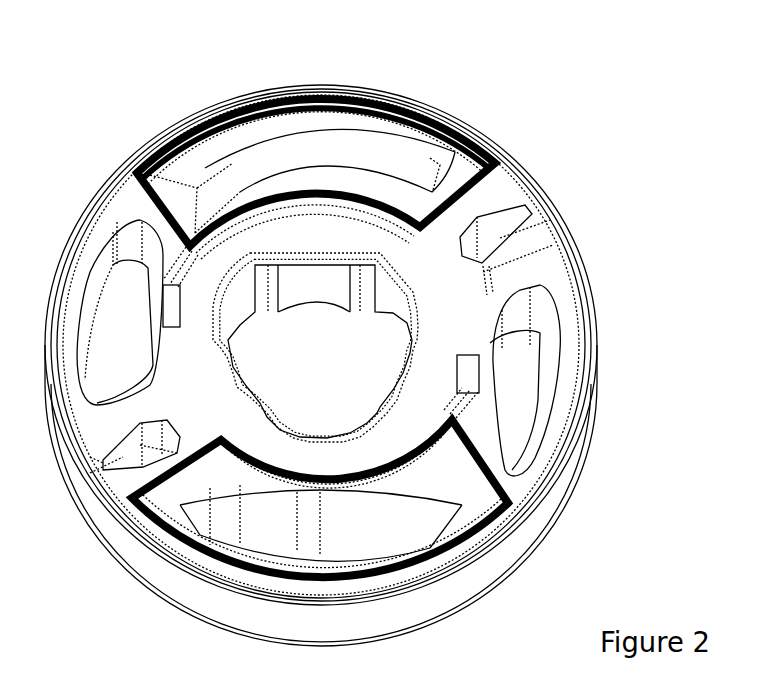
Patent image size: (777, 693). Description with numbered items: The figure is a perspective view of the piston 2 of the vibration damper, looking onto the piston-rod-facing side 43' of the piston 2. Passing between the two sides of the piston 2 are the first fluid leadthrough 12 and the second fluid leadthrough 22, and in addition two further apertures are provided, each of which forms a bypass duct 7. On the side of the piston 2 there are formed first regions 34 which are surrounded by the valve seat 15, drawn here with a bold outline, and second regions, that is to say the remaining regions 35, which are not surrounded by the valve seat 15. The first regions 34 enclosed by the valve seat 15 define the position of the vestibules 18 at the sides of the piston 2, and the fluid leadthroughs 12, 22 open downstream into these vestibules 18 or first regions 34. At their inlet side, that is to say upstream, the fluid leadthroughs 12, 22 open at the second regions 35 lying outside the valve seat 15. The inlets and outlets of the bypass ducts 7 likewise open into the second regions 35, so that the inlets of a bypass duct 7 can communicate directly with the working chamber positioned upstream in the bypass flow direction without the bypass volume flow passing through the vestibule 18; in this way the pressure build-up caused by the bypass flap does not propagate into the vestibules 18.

The piston 2 is at (190, 92).
The first valve seat 15 is at (381, 102).
The vestibule 18 is at (326, 165).
The first side region, surrounded by valve seat 34 is at (429, 533).
The first fluid leadthrough 12 is at (374, 161).
The piston-rod-facing side of the piston 43' is at (315, 327).
The second side region, not surrounded by valve seat 35 is at (460, 298).
The second fluid leadthrough 22 is at (141, 323).
The bypass duct 7 is at (495, 232).